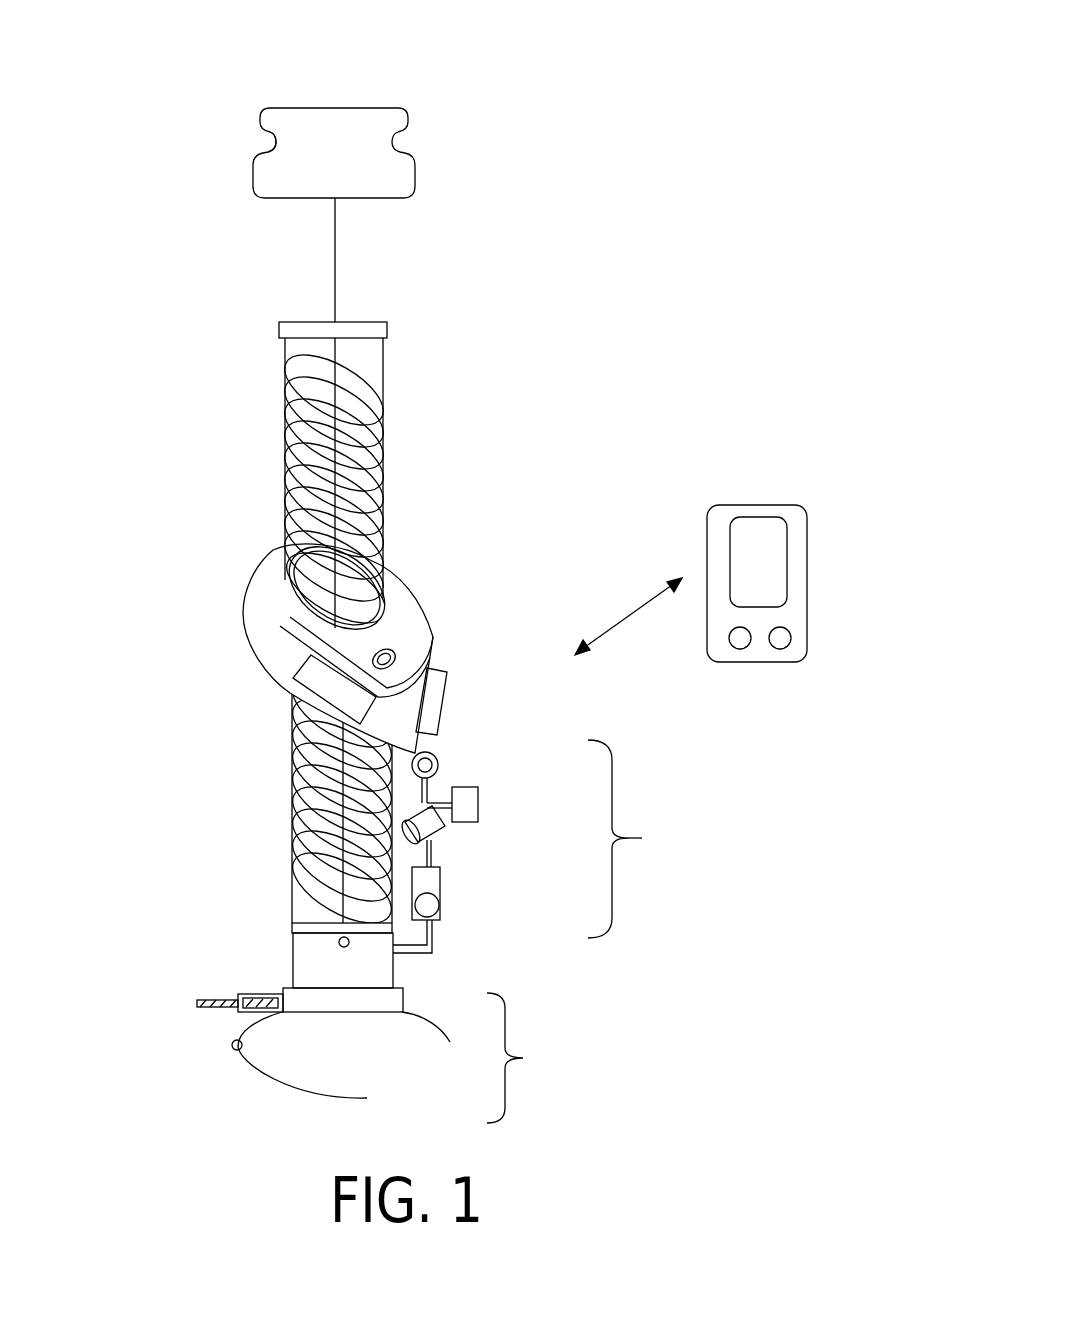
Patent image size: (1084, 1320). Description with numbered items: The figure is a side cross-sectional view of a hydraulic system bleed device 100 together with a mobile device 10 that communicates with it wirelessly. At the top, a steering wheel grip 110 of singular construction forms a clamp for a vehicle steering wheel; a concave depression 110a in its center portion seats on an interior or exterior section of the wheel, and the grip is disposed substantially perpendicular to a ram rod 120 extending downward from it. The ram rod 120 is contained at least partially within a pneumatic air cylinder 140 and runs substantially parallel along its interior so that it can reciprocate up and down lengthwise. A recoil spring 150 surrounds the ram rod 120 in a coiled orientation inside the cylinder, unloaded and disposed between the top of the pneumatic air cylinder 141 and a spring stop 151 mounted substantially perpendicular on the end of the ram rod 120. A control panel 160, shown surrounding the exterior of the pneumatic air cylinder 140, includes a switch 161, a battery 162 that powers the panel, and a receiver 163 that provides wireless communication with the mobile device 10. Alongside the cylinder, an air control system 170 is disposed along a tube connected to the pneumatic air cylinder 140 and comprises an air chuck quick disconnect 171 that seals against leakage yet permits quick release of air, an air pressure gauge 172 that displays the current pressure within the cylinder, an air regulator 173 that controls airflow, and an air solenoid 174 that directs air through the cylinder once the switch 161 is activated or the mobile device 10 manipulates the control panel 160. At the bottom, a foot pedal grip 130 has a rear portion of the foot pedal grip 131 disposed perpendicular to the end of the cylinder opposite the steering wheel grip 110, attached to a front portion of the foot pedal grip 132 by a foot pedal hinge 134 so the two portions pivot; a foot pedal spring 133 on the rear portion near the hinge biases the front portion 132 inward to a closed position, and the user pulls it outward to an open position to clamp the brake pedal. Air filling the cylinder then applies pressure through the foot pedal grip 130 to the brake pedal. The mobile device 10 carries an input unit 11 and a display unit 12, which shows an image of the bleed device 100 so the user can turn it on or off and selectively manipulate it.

The hydraulic system bleed device 100 is at (352, 34).
The steering wheel grip 110 is at (380, 168).
The concave depression 110a is at (273, 140).
The ram rod 120 is at (335, 295).
The foot pedal grip 130 is at (355, 1044).
The rear portion of the foot pedal grip 131 is at (442, 1025).
The front portion of the foot pedal grip 132 is at (305, 1088).
The foot pedal spring 133 is at (245, 995).
The foot pedal hinge 134 is at (235, 1048).
The pneumatic air cylinder 140 is at (388, 373).
The top of the pneumatic air cylinder 141 is at (280, 325).
The recoil spring 150 is at (388, 450).
The spring stop 151 is at (292, 925).
The control panel 160 is at (246, 605).
The switch 161 is at (393, 657).
The battery 162 is at (356, 699).
The receiver 163 is at (447, 703).
The air control system 170 is at (538, 834).
The air chuck quick disconnect 171 is at (440, 762).
The air pressure gauge 172 is at (480, 805).
The air regulator 173 is at (437, 836).
The air solenoid 174 is at (443, 887).
The mobile device 10 is at (760, 505).
The input unit 11 is at (788, 643).
The display unit 12 is at (785, 577).